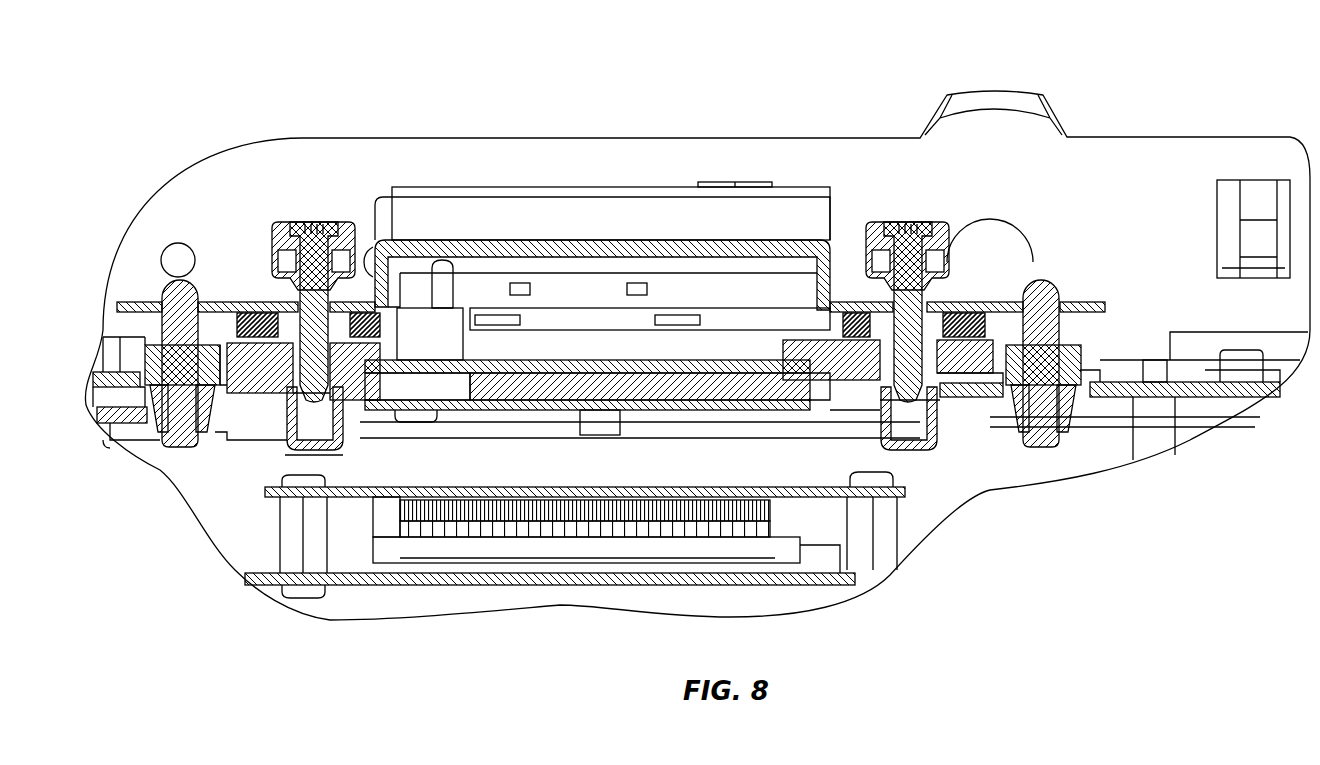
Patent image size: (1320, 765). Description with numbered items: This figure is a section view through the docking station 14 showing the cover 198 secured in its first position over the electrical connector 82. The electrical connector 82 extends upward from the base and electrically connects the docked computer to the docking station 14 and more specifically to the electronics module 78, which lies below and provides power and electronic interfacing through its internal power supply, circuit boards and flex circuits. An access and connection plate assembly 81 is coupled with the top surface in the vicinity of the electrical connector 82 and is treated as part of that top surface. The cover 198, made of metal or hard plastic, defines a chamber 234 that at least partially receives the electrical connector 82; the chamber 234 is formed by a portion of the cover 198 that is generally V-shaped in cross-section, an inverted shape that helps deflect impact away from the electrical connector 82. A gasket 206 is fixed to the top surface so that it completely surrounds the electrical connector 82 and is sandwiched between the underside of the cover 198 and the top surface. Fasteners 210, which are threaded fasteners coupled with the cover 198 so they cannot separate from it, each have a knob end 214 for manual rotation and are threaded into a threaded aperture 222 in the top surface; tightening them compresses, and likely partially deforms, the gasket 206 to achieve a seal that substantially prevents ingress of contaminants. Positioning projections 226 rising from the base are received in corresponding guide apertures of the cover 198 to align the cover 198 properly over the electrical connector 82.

The docking station 14 is at (1190, 118).
The electronics module 78 is at (246, 528).
The access and connection plate assembly 81 is at (1190, 395).
The electrical connector 82 is at (568, 188).
The cover 198 is at (1085, 300).
The gasket 206 is at (1020, 318).
The fasteners 210 is at (293, 225).
The knob end 214 is at (273, 243).
The threaded aperture 222 is at (300, 447).
The positioning projections 226 is at (170, 290).
The chamber 234 is at (762, 272).